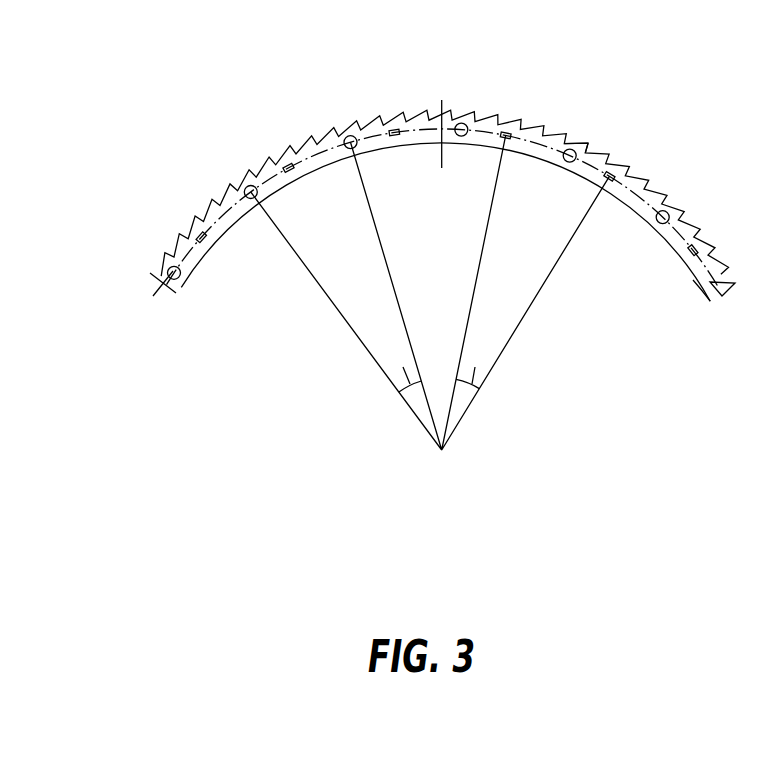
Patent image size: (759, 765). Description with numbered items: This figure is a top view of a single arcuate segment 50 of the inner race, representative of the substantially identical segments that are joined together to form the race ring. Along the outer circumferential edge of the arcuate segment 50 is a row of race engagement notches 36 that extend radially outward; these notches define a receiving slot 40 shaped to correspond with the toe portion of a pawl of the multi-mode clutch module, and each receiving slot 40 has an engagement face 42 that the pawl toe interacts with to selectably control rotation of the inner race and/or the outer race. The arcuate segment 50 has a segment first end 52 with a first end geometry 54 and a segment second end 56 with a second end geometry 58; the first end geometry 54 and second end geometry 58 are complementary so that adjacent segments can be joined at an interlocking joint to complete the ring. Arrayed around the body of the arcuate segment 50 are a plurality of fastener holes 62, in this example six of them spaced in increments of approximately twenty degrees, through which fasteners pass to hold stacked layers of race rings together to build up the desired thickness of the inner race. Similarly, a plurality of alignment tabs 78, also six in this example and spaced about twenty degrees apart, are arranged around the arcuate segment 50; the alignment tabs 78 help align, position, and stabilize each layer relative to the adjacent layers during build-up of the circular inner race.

The arcuate segment 50 is at (178, 164).
The race engagement notches 36 is at (497, 121).
The receiving slot 40 is at (568, 141).
The engagement face 42 is at (587, 150).
The segment first end 52 is at (183, 287).
The first end geometry 54 is at (160, 290).
The segment second end 56 is at (711, 303).
The second end geometry 58 is at (723, 294).
The fastener holes 62 is at (247, 186).
The alignment tabs 78 is at (286, 162).